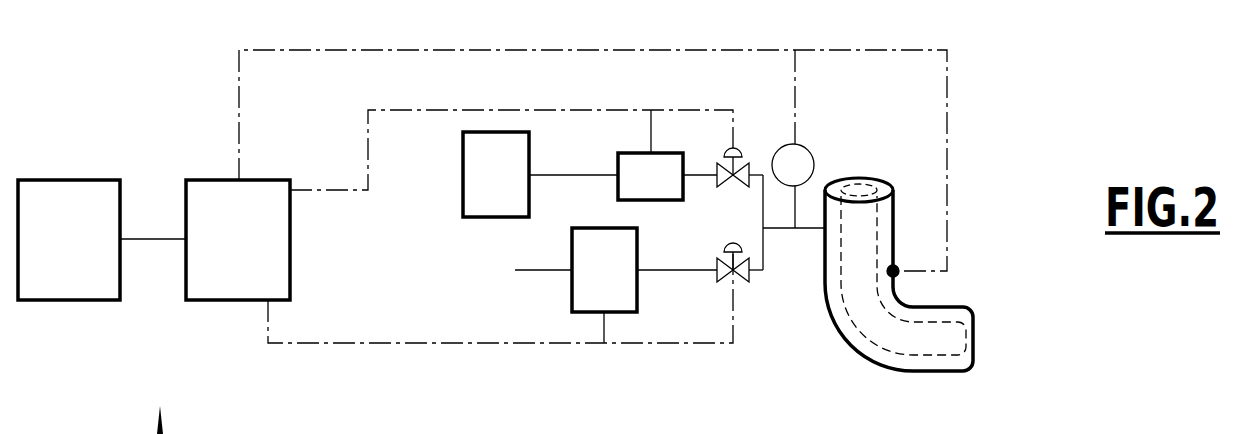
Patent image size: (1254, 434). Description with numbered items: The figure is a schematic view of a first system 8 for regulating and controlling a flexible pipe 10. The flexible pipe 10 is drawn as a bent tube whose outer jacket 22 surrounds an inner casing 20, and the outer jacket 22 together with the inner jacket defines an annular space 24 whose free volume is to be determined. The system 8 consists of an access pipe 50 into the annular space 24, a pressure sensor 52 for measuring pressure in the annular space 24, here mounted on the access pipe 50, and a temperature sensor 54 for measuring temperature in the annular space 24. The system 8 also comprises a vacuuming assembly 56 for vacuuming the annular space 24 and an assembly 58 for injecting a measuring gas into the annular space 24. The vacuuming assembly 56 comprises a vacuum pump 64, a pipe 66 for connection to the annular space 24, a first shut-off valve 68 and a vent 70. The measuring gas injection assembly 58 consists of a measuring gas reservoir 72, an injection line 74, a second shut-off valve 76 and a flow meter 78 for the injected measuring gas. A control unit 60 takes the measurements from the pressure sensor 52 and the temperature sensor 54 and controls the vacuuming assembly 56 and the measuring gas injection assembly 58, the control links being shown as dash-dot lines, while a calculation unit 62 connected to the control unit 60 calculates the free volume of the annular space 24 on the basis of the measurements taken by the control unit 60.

The system 8 is at (1022, 118).
The flexible pipe 10 is at (950, 310).
The inner casing 20 is at (880, 222).
The outer jacket 22 is at (897, 205).
The annular space 24 is at (888, 360).
The access pipe 50 is at (778, 232).
The pressure sensor 52 is at (816, 170).
The temperature sensor 54 is at (899, 268).
The vacuuming assembly 56 is at (527, 355).
The measuring gas injection assembly 58 is at (634, 101).
The control unit 60 is at (255, 258).
The calculation unit 62 is at (84, 258).
The vacuum pump 64 is at (570, 252).
The pipe 66 is at (658, 275).
The first shut-off valve 68 is at (742, 286).
The vent 70 is at (515, 270).
The measuring gas reservoir 72 is at (463, 157).
The injection line 74 is at (547, 175).
The second shut-off valve 76 is at (731, 188).
The flow meter 78 is at (672, 153).